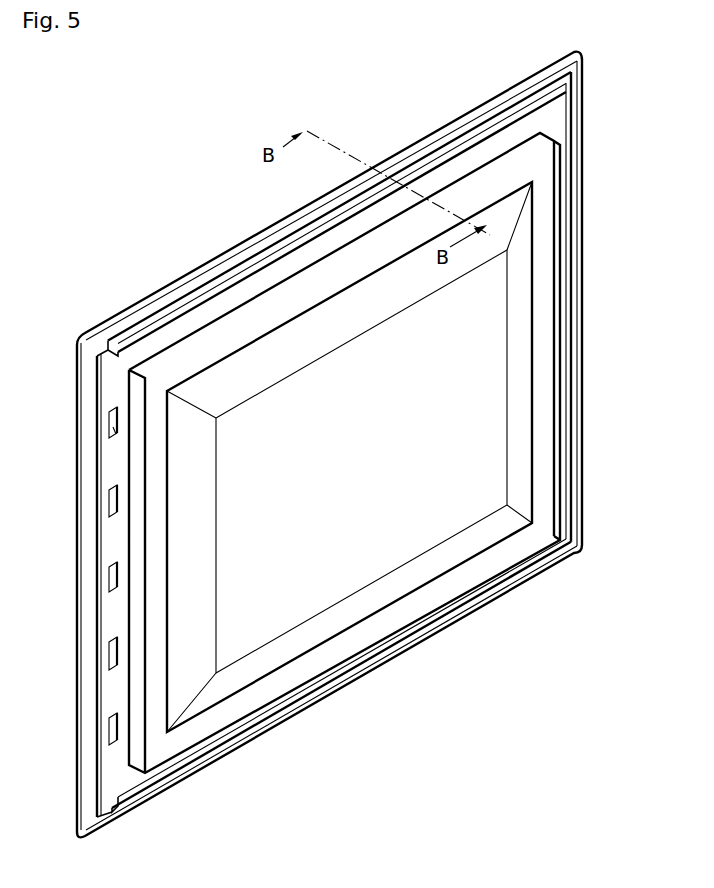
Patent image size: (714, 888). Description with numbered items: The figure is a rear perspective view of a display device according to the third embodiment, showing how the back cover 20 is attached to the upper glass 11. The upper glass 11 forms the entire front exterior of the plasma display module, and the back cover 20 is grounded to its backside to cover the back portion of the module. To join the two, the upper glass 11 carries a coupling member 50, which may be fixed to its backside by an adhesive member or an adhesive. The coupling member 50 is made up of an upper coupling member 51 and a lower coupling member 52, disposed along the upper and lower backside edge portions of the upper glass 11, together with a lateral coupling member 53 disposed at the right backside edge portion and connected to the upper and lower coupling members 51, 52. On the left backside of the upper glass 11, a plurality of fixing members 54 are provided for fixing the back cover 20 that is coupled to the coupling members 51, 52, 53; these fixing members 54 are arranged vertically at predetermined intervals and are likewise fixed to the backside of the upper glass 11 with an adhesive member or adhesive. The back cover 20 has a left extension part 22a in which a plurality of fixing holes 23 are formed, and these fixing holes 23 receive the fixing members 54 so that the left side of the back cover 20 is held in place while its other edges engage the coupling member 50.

The coupling member 50 is at (583, 133).
The upper glass 11 is at (207, 262).
The upper coupling member 51 is at (300, 238).
The lateral coupling member 53 is at (572, 410).
The lower coupling member 52 is at (412, 637).
The left extension part 22a is at (108, 618).
The back cover 20 is at (534, 332).
The fixing holes 23 is at (113, 427).
The fixing members 54 is at (117, 446).